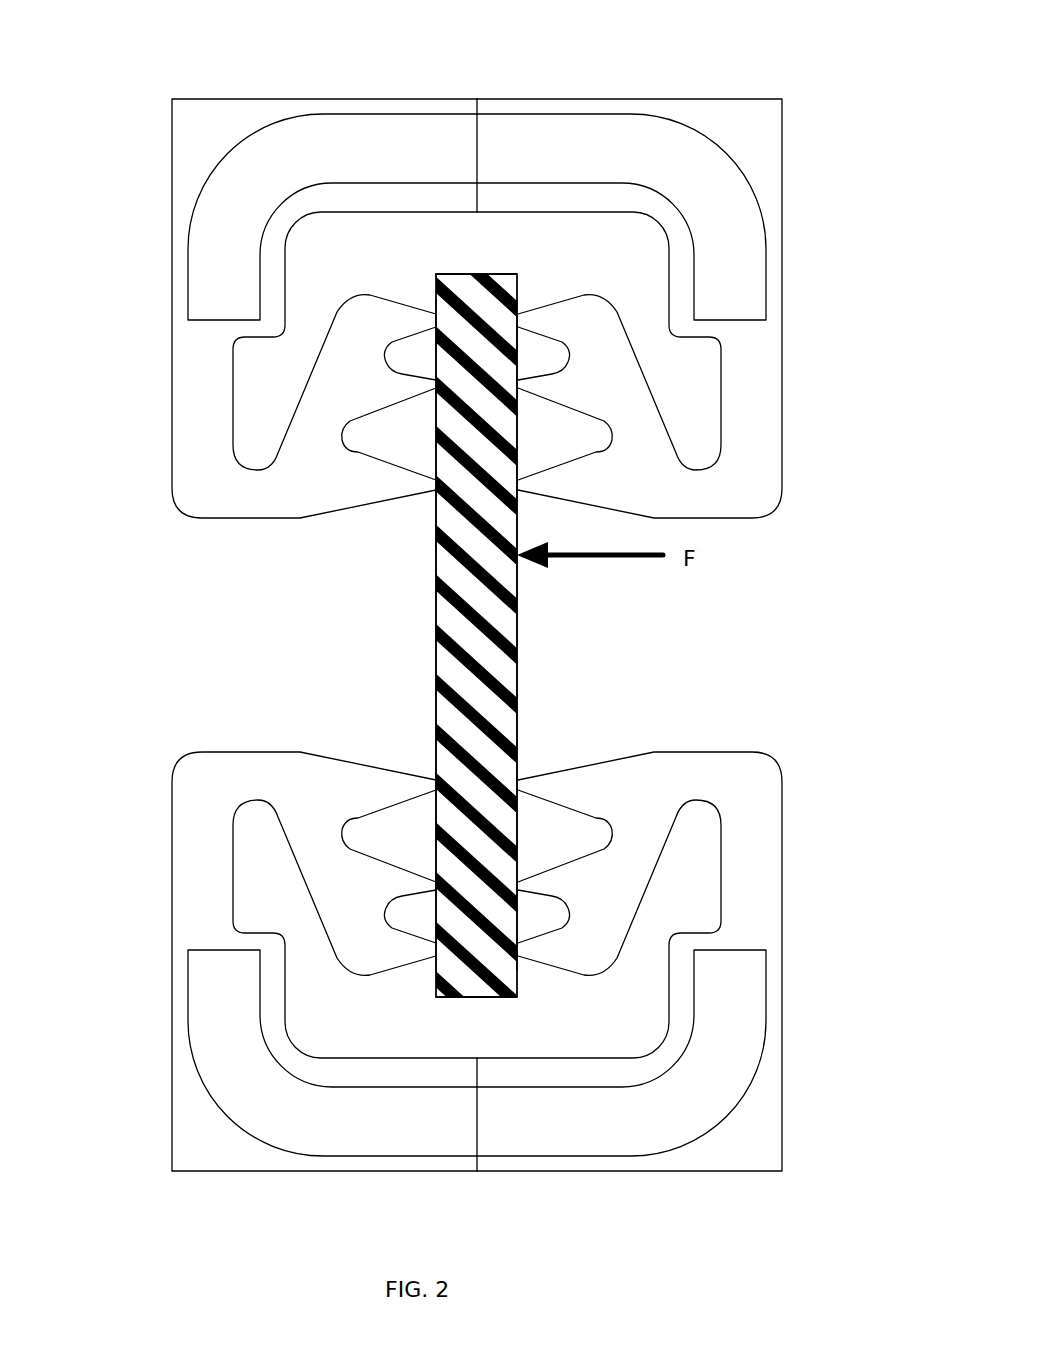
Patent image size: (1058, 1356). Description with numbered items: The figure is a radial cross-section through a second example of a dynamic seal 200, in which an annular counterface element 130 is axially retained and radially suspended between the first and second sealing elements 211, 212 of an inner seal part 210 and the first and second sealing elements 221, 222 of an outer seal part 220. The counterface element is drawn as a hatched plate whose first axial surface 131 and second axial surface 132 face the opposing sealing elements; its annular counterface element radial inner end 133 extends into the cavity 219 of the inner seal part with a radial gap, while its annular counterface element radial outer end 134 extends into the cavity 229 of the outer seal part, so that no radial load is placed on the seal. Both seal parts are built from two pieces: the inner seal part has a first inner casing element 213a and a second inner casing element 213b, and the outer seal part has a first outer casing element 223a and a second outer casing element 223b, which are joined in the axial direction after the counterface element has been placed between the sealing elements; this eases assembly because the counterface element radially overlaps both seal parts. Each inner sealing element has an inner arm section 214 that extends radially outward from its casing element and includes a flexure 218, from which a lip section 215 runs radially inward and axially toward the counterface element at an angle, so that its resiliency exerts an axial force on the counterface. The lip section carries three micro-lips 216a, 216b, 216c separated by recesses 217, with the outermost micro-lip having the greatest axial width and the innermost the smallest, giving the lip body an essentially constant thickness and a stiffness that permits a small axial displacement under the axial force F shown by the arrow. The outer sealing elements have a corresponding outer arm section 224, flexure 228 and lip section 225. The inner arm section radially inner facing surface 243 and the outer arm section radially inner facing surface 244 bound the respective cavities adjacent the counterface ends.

The dynamic seal 200 is at (785, 1237).
The inner seal part 210 is at (158, 1192).
The first sealing element 211 is at (165, 735).
The second sealing element 212 is at (789, 735).
The first inner casing element 213a is at (397, 1132).
The second inner casing element 213b is at (587, 1132).
The inner arm section 214 is at (750, 840).
The lip section 215 is at (620, 860).
The micro-lip 216a is at (436, 780).
The micro-lip 216b is at (420, 883).
The micro-lip 216c is at (420, 948).
The recess 217 is at (552, 915).
The flexure 218 is at (247, 780).
The cavity 219 is at (359, 1014).
The outer seal part 220 is at (790, 95).
The first sealing element 221 is at (124, 408).
The second sealing element 222 is at (830, 408).
The first outer casing element 223a is at (397, 164).
The second outer casing element 223b is at (587, 164).
The outer arm section 224 is at (203, 368).
The lip section 225 is at (325, 377).
The flexure 228 is at (207, 487).
The cavity 229 is at (359, 280).
The inner arm section radially inner facing surface 243 is at (477, 1046).
The outer arm section radially inner facing surface 244 is at (477, 224).
The annular counterface element 130 is at (480, 577).
The first axial surface 131 is at (423, 628).
The second axial surface 132 is at (530, 628).
The annular counterface element radial inner end 133 is at (477, 1010).
The annular counterface element radial outer end 134 is at (477, 261).